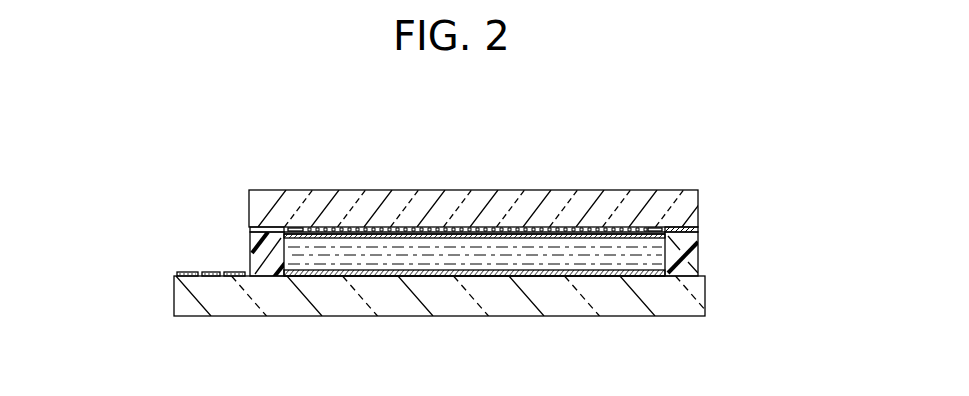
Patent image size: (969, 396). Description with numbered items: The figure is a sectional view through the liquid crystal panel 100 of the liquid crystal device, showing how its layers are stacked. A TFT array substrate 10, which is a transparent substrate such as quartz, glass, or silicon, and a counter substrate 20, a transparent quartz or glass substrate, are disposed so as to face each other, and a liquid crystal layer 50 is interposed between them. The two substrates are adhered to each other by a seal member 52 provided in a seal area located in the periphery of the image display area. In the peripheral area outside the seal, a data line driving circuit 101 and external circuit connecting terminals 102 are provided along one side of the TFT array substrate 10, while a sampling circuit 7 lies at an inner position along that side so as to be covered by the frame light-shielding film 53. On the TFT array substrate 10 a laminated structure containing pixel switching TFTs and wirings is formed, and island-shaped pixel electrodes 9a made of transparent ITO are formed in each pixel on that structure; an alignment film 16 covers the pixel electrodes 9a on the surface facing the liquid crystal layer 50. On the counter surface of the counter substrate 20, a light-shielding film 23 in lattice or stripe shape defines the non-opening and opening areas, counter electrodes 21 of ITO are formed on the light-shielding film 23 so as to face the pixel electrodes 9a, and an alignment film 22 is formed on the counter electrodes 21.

The liquid crystal panel 100 is at (627, 89).
The TFT array substrate 10 is at (502, 306).
The counter substrate 20 is at (393, 205).
The counter electrodes 21 is at (471, 228).
The alignment film 22 is at (603, 240).
The light-shielding film 23 is at (549, 234).
The liquid crystal layer 50 is at (423, 258).
The seal member 52 is at (249, 249).
The frame light-shielding film 53 is at (277, 227).
The sampling circuit 7 is at (295, 278).
The pixel electrodes 9a is at (332, 278).
The alignment film 16 is at (588, 263).
The data line driving circuit 101 is at (232, 273).
The external circuit connecting terminals 102 is at (188, 273).